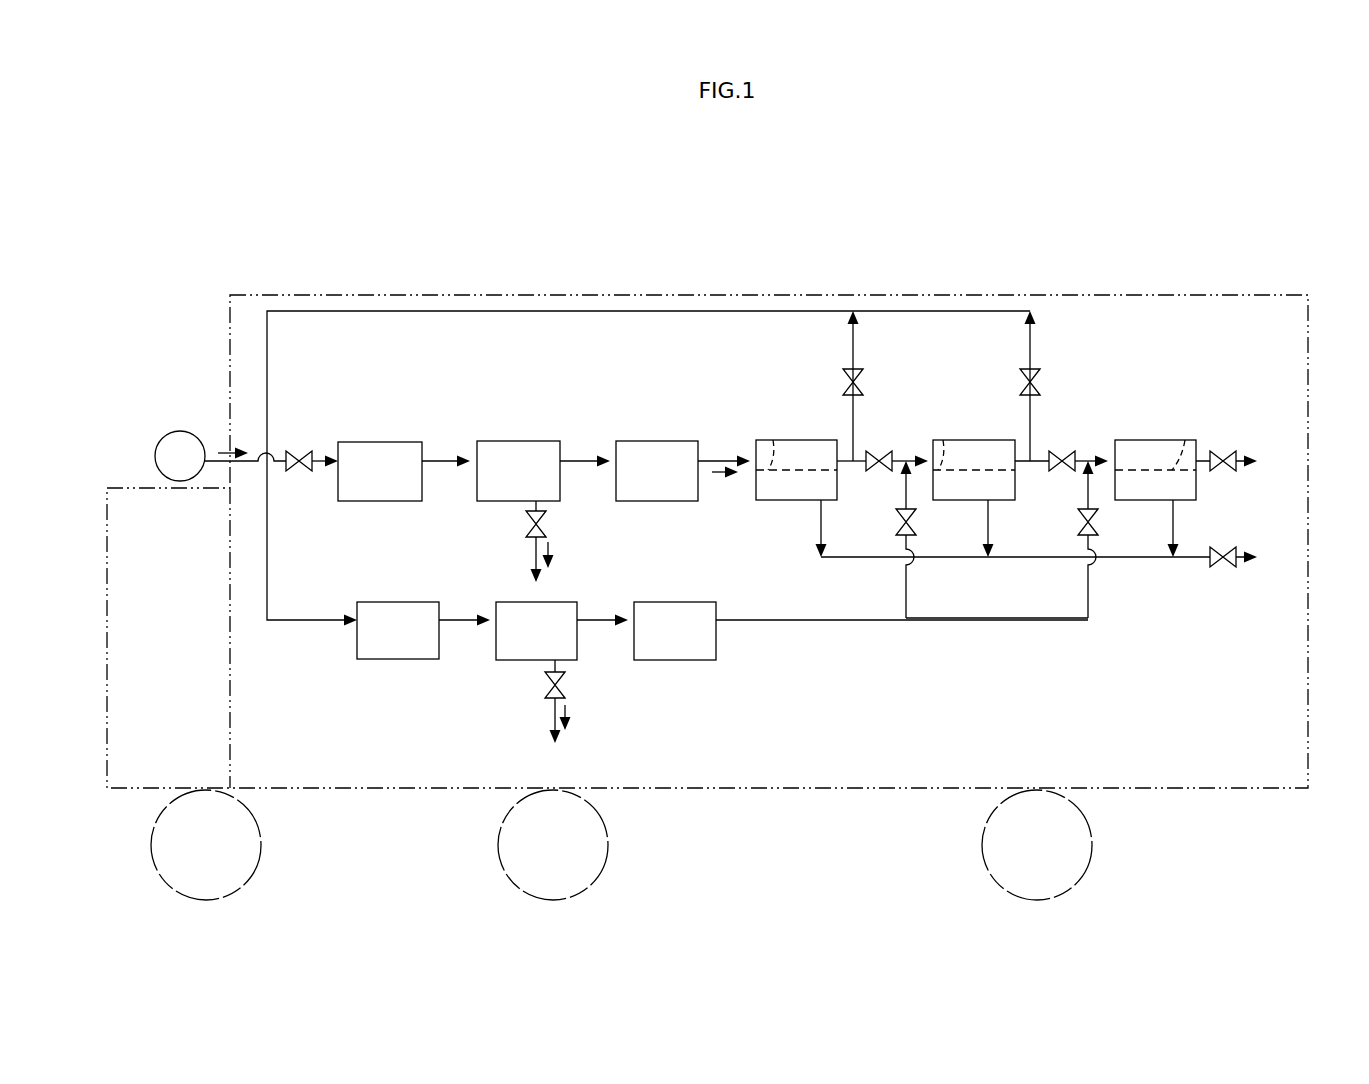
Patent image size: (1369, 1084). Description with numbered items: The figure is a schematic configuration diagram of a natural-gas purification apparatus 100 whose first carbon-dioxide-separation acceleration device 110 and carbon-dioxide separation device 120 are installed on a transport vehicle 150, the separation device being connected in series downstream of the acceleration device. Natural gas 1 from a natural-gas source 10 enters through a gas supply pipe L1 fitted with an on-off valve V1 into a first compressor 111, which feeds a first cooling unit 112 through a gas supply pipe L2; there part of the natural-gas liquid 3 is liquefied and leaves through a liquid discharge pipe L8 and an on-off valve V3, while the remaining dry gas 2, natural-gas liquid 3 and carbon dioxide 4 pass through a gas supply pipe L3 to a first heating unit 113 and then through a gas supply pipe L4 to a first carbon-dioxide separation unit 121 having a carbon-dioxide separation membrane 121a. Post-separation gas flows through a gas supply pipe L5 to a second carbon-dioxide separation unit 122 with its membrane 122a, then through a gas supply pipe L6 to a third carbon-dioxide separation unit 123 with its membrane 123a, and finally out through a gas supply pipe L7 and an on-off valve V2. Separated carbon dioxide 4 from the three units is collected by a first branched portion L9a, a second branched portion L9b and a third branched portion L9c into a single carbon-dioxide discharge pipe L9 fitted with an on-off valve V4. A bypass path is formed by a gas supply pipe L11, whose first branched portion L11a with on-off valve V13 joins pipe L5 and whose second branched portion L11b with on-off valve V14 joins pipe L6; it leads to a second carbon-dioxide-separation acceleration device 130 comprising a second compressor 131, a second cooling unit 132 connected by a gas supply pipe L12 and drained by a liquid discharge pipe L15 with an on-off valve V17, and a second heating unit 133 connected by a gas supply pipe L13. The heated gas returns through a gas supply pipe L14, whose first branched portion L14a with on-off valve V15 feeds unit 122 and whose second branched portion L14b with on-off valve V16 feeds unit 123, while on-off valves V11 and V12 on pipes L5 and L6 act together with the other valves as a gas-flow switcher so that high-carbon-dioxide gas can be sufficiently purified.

The natural gas 1 is at (182, 437).
The dry gas 2 is at (718, 478).
The natural-gas liquid 3 is at (550, 546).
The carbon dioxide 4 is at (1272, 557).
The natural-gas source 10 is at (160, 447).
The natural-gas purification apparatus 100 is at (1199, 283).
The first carbon-dioxide-separation acceleration device 110 is at (565, 385).
The first compressor 111 is at (380, 440).
The first cooling unit 112 is at (520, 440).
The first heating unit 113 is at (665, 440).
The carbon-dioxide separation device 120 is at (970, 382).
The first carbon-dioxide separation unit 121 is at (815, 440).
The carbon-dioxide separation membrane 121a is at (773, 440).
The second carbon-dioxide separation unit 122 is at (993, 440).
The carbon-dioxide separation membrane 122a is at (943, 440).
The third carbon-dioxide separation unit 123 is at (1145, 440).
The carbon-dioxide separation membrane 123a is at (1185, 440).
The second carbon-dioxide-separation acceleration device 130 is at (459, 712).
The second compressor 131 is at (380, 662).
The second cooling unit 132 is at (502, 662).
The second heating unit 133 is at (683, 662).
The transport vehicle 150 is at (1210, 790).
The gas supply pipe L1 is at (283, 456).
The gas supply pipe L2 is at (448, 458).
The gas supply pipe L3 is at (594, 458).
The gas supply pipe L4 is at (735, 458).
The gas supply pipe L5 is at (845, 465).
The gas supply pipe L6 is at (1022, 465).
The gas supply pipe L7 is at (1248, 472).
The liquid discharge pipe L8 is at (530, 555).
The carbon-dioxide discharge pipe L9 is at (1248, 567).
The first branched portion L9a is at (820, 530).
The second branched portion L9b is at (990, 562).
The third branched portion L9c is at (1170, 565).
The gas supply pipe L11 is at (325, 314).
The first branched portion L11a is at (853, 345).
The second branched portion L11b is at (1035, 340).
The gas supply pipe L12 is at (458, 623).
The gas supply pipe L13 is at (617, 618).
The gas supply pipe L14 is at (828, 622).
The first branched portion L14a is at (906, 580).
The second branched portion L14b is at (1090, 622).
The liquid discharge pipe L15 is at (548, 735).
The on-off valve V1 is at (303, 474).
The on-off valve V2 is at (1225, 472).
The on-off valve V3 is at (525, 526).
The on-off valve V4 is at (1225, 570).
The on-off valve V11 is at (885, 452).
The on-off valve V12 is at (1065, 452).
The on-off valve V13 is at (860, 378).
The on-off valve V14 is at (1042, 374).
The on-off valve V15 is at (914, 524).
The on-off valve V16 is at (1097, 524).
The on-off valve V17 is at (567, 688).